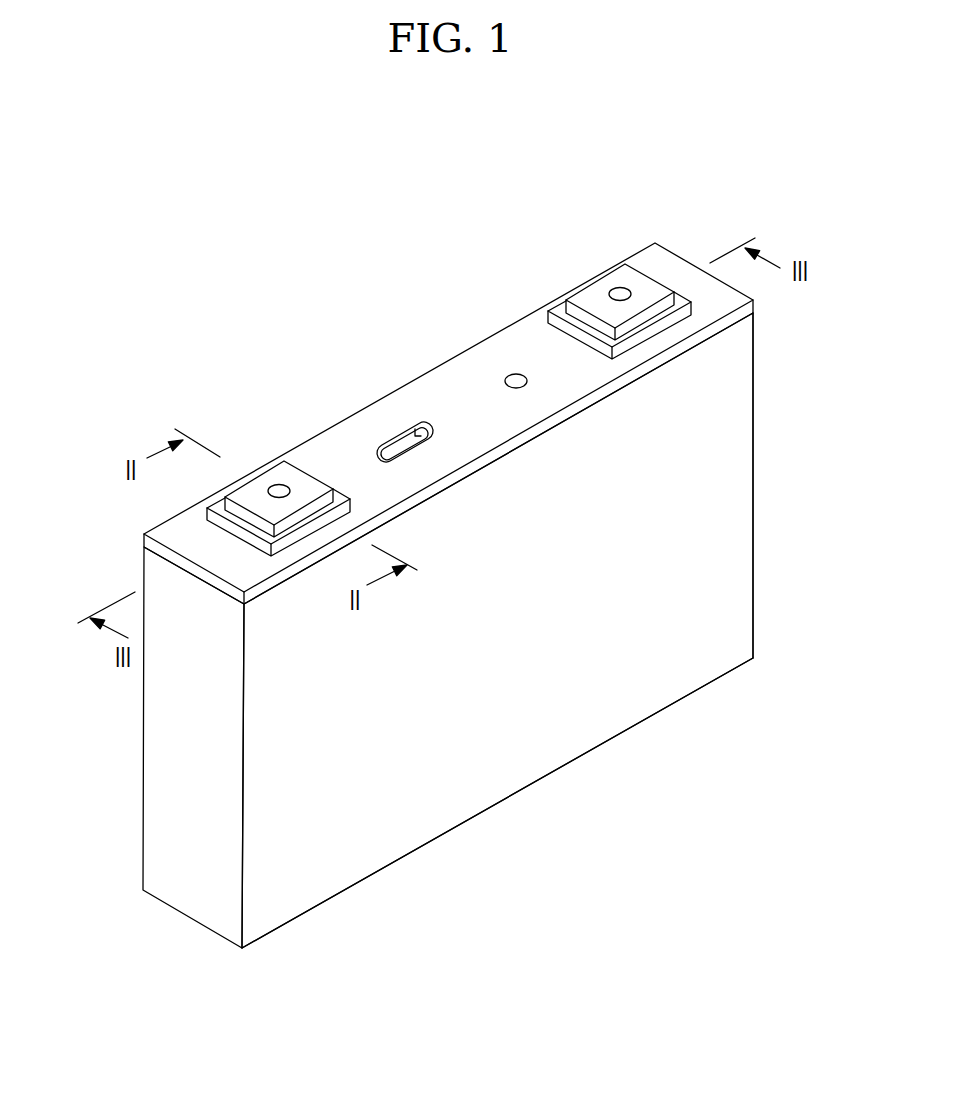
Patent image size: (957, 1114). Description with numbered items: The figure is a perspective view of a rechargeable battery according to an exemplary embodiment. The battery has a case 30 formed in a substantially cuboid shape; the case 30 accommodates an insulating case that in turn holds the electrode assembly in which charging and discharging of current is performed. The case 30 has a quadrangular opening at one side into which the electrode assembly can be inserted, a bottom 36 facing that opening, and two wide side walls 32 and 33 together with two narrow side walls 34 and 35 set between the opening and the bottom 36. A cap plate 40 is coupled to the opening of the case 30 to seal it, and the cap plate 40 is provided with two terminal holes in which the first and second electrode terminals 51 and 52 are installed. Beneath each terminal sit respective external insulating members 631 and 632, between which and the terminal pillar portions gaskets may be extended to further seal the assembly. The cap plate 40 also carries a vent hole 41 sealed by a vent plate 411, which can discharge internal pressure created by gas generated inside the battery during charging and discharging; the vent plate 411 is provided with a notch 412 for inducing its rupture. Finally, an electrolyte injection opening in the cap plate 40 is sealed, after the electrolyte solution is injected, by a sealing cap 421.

The case 30 is at (457, 571).
The wide side wall 32 is at (449, 630).
The wide side wall 33 is at (503, 731).
The narrow side wall 34 is at (190, 810).
The narrow side wall 35 is at (754, 437).
The bottom 36 is at (375, 873).
The cap plate 40 is at (448, 423).
The vent hole 41 is at (359, 394).
The vent plate 411 is at (393, 440).
The notch 412 is at (400, 436).
The sealing cap 421 is at (516, 374).
The first electrode terminal 51 is at (263, 462).
The second electrode terminal 52 is at (603, 274).
The external insulating member 631 is at (220, 520).
The external insulating member 632 is at (548, 316).